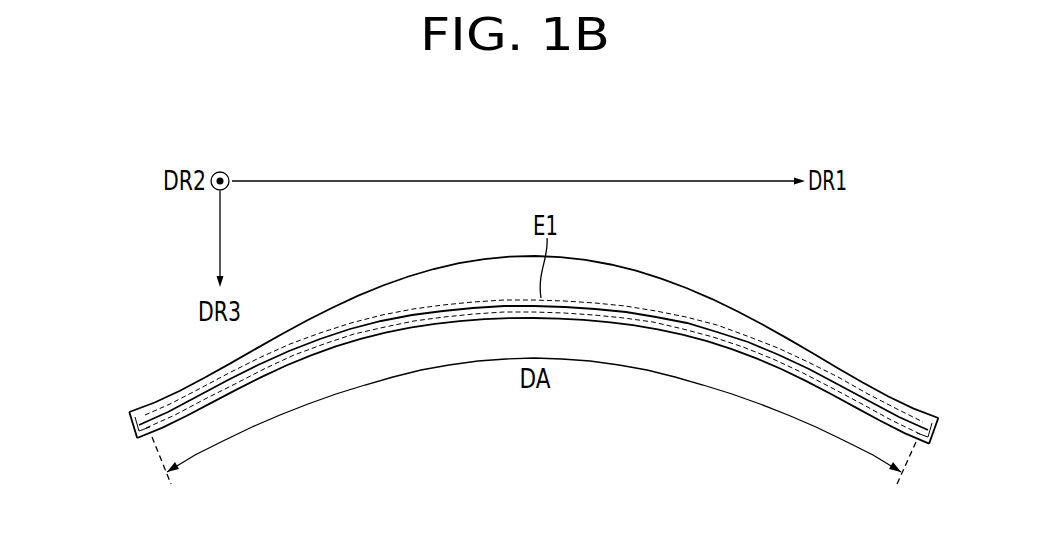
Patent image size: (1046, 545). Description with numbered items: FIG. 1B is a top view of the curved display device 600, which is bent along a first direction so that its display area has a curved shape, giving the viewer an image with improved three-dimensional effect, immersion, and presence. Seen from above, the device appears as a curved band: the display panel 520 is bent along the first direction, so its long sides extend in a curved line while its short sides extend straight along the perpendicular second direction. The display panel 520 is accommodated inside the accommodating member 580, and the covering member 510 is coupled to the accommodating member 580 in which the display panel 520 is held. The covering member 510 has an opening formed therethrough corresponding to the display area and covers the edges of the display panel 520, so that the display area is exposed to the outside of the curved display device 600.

The covering member 510 is at (136, 440).
The display panel 520 is at (382, 308).
The accommodating member 580 is at (130, 419).
The curved display device 600 is at (869, 306).